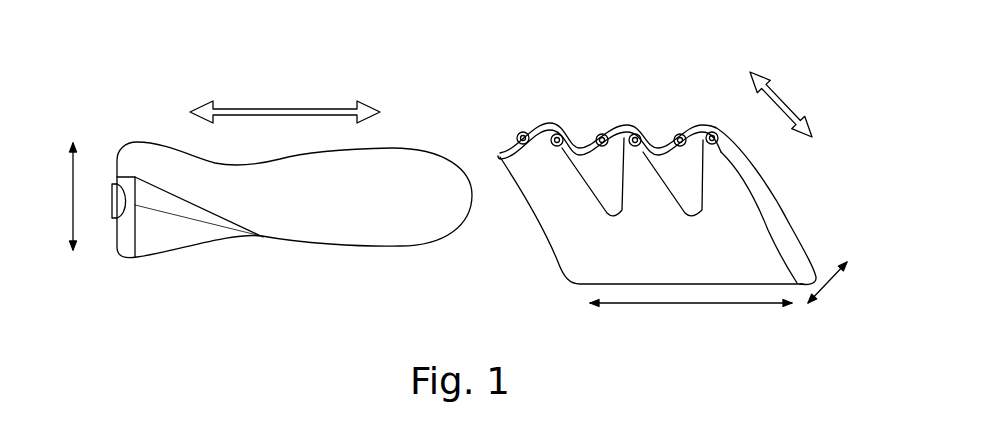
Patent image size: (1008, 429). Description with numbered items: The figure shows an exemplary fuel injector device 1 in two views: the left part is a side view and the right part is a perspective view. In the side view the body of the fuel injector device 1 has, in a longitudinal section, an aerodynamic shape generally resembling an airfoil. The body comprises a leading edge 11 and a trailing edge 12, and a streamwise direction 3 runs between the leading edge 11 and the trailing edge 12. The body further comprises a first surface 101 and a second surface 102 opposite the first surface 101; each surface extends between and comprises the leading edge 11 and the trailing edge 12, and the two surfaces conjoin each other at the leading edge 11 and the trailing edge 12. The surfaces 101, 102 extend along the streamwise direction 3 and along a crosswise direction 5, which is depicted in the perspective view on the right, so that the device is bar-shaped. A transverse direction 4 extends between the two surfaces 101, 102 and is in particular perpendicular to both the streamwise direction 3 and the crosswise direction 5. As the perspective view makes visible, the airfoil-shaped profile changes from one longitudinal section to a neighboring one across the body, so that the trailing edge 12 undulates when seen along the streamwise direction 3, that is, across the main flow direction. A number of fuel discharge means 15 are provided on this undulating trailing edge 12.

The fuel injector device 1 is at (410, 256).
The leading edge 11 is at (470, 193).
The trailing edge 12 is at (118, 150).
The fuel discharge means 15 is at (110, 203).
The first surface 101 is at (388, 148).
The second surface 102 is at (348, 248).
The streamwise direction 3 is at (501, 104).
The transverse direction 4 is at (452, 224).
The crosswise direction 5 is at (691, 316).